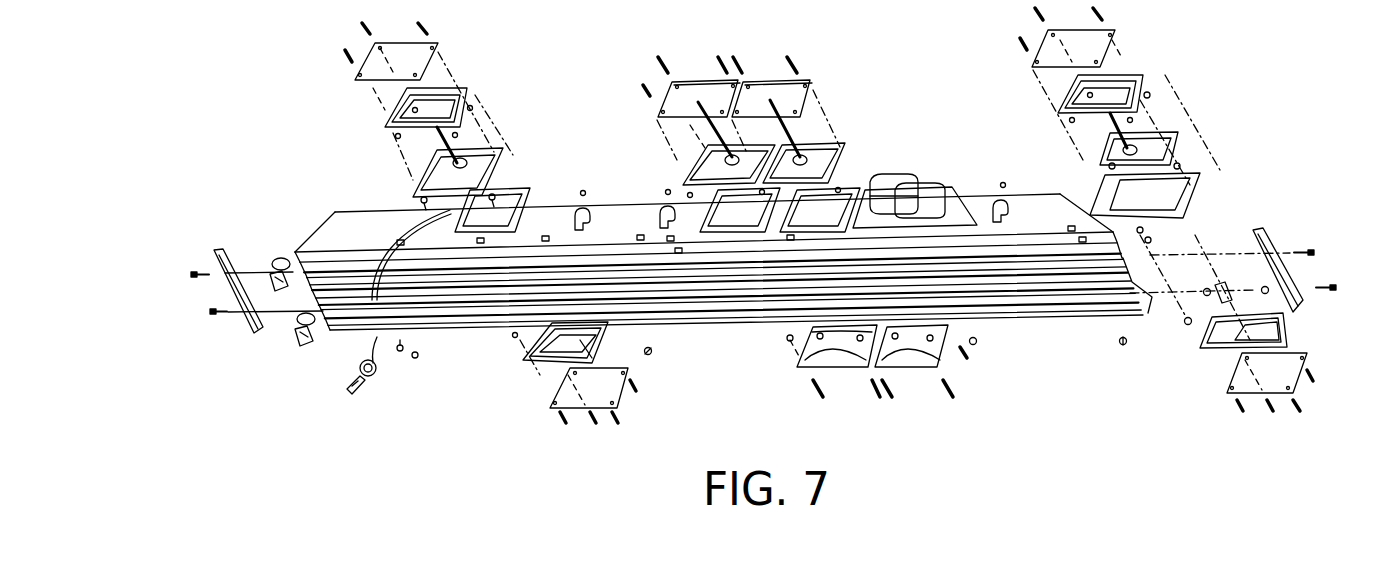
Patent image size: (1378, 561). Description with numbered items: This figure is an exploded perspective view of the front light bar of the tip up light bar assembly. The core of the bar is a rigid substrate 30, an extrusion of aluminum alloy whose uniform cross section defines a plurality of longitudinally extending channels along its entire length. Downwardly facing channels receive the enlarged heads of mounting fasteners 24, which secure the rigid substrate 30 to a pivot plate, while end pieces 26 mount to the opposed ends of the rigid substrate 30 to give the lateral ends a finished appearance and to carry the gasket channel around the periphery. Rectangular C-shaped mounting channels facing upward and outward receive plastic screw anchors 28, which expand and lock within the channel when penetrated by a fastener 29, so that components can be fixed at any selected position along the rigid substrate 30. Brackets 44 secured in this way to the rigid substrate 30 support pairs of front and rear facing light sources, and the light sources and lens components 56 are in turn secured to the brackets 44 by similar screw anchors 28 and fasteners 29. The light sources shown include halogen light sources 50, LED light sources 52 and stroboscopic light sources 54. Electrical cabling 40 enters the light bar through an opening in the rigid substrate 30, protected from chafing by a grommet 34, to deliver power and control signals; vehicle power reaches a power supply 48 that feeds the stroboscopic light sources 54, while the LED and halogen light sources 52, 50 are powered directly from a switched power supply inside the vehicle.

The mounting fasteners 24 is at (300, 326).
The end pieces 26 is at (223, 297).
The plastic screw anchors 28 is at (399, 242).
The fastener 29 is at (415, 200).
The rigid substrate 30 is at (450, 333).
The grommet 34 is at (376, 380).
The electrical cabling 40 is at (355, 393).
The brackets 44 is at (415, 182).
The power supply 48 is at (960, 190).
The halogen light sources 50 is at (845, 370).
The LED light sources 52 is at (660, 88).
The stroboscopic light sources 54 is at (407, 117).
The lens components 56 is at (362, 47).